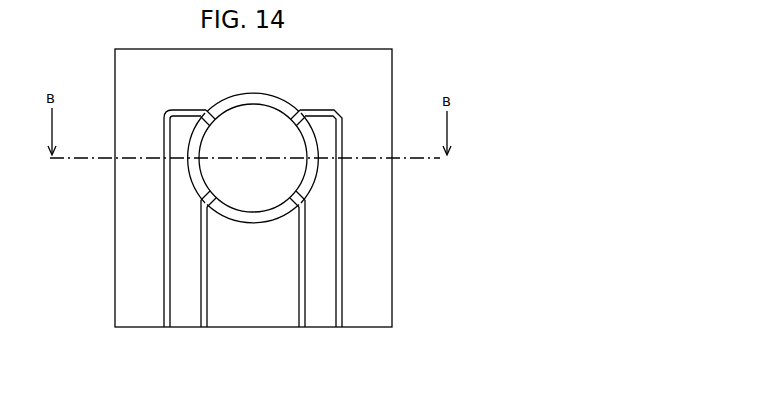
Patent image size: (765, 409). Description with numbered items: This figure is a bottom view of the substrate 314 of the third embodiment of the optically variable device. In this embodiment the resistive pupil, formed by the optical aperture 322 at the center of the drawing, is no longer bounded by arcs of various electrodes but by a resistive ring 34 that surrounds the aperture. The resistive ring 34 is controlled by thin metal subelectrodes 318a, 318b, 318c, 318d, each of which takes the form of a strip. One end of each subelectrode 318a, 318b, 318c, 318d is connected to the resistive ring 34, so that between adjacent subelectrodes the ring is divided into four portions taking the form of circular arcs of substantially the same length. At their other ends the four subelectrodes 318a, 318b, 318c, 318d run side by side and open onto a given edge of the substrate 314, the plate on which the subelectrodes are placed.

The resistive ring 34 is at (288, 109).
The substrate 314 is at (368, 278).
The optical aperture 322 is at (263, 199).
The subelectrode 318a is at (337, 328).
The subelectrode 318b is at (300, 328).
The subelectrode 318c is at (203, 328).
The subelectrode 318d is at (168, 328).